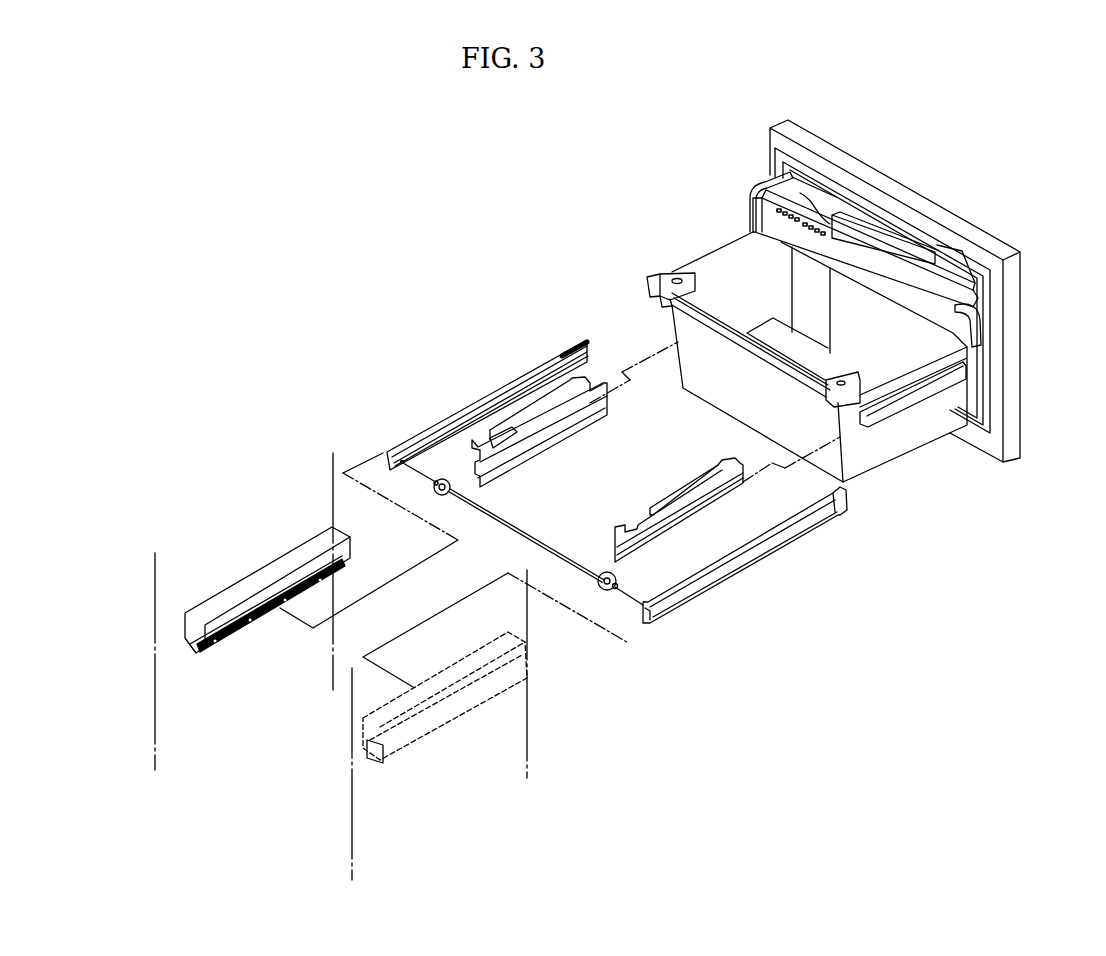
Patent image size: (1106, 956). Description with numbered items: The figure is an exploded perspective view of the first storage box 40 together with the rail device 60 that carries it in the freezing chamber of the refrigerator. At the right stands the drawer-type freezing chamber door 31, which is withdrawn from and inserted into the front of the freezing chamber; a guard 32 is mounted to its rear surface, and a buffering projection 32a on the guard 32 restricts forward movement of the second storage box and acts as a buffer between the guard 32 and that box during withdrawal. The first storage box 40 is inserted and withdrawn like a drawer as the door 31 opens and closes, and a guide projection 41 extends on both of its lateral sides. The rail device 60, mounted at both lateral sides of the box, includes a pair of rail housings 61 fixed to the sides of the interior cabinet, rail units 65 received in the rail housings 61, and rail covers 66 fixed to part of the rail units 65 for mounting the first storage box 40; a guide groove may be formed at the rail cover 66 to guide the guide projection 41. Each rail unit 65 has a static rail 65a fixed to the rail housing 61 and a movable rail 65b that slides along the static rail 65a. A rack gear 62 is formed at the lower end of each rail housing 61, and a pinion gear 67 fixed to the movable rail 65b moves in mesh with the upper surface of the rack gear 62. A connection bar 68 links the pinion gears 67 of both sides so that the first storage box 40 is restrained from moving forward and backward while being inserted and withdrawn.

The freezing chamber door 31 is at (1012, 358).
The guard 32 is at (917, 284).
The buffering projection 32a is at (751, 223).
The first storage box 40 is at (877, 452).
The guide projection 41 is at (903, 404).
The rail device 60 is at (457, 390).
The rail housing 61 is at (295, 556).
The rack gear 62 is at (199, 652).
The rail unit 65 is at (793, 545).
The static rail 65a is at (518, 378).
The movable rail 65b is at (565, 364).
The rail cover 66 is at (577, 428).
The pinion gear 67 is at (617, 579).
The connection bar 68 is at (523, 529).